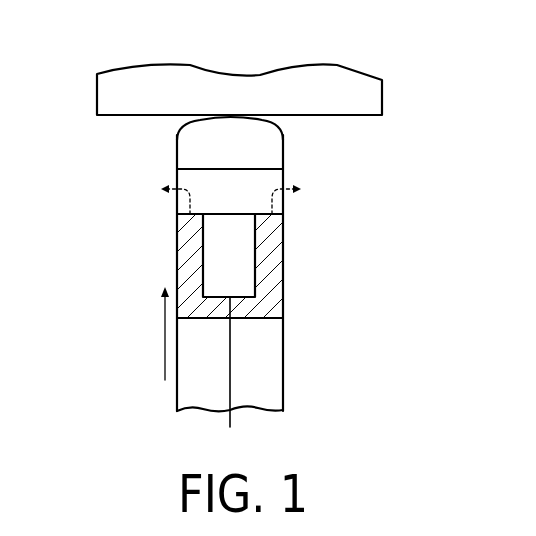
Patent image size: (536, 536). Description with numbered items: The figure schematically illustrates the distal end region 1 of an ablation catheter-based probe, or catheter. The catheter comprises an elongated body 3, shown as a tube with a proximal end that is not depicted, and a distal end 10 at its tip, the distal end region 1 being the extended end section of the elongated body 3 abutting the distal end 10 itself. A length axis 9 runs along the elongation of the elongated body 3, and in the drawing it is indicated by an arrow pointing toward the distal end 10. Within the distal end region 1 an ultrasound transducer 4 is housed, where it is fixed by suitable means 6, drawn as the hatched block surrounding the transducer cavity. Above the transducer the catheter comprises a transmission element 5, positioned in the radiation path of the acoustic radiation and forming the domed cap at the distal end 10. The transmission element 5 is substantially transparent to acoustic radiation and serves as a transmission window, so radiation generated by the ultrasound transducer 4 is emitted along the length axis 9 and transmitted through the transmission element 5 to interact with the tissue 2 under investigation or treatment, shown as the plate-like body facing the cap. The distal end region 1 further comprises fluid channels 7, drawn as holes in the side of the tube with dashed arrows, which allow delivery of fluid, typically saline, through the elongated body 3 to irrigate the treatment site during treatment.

The distal end region 1 is at (133, 226).
The tissue 2 is at (382, 98).
The elongated body 3 is at (283, 360).
The ultrasound transducer 4 is at (243, 247).
The transmission element 5 is at (178, 149).
The fixing means 6 is at (268, 272).
The fluid channels 7 is at (283, 185).
The length axis 9 is at (165, 342).
The distal end 10 is at (219, 108).